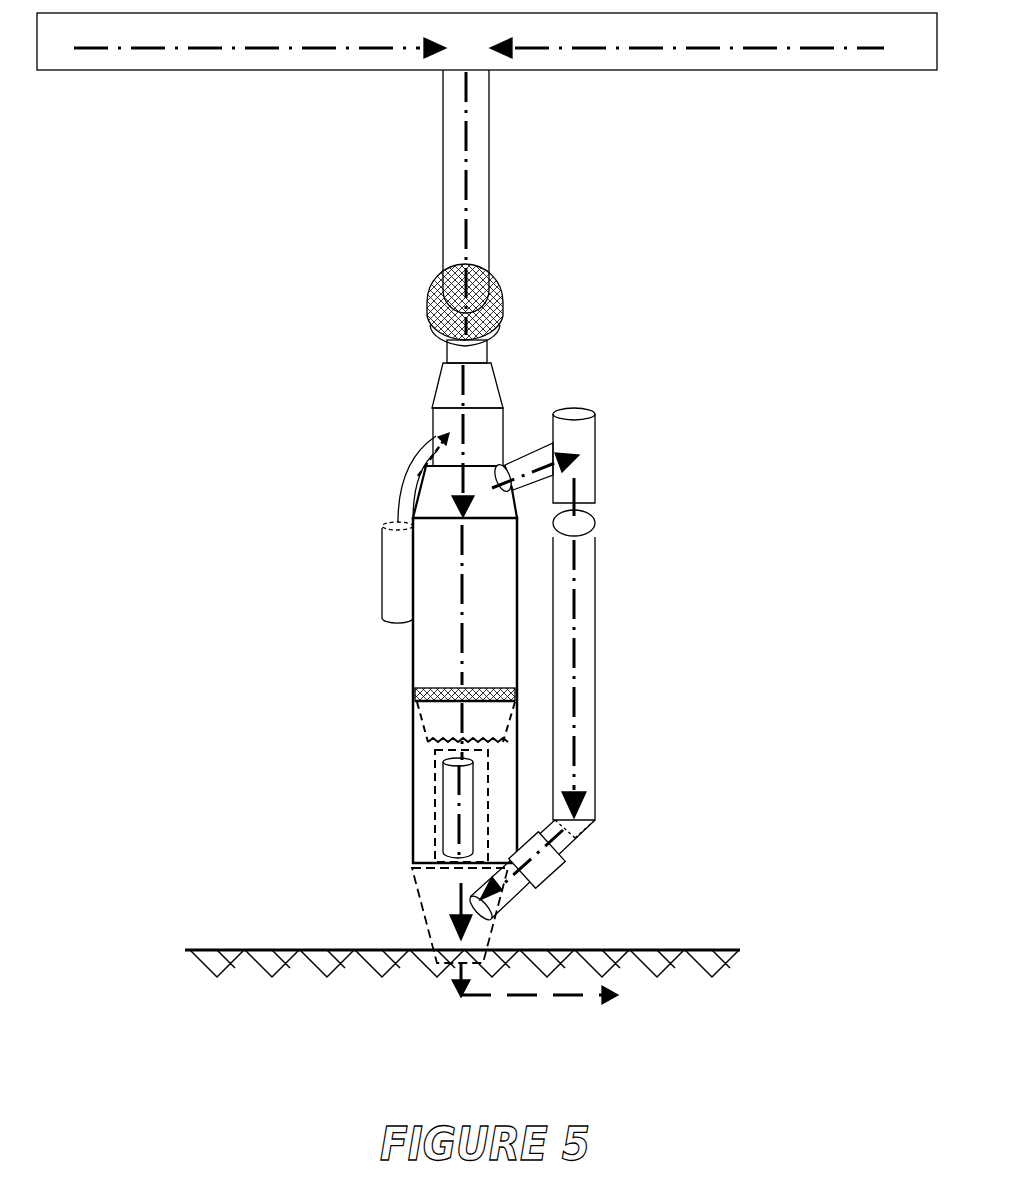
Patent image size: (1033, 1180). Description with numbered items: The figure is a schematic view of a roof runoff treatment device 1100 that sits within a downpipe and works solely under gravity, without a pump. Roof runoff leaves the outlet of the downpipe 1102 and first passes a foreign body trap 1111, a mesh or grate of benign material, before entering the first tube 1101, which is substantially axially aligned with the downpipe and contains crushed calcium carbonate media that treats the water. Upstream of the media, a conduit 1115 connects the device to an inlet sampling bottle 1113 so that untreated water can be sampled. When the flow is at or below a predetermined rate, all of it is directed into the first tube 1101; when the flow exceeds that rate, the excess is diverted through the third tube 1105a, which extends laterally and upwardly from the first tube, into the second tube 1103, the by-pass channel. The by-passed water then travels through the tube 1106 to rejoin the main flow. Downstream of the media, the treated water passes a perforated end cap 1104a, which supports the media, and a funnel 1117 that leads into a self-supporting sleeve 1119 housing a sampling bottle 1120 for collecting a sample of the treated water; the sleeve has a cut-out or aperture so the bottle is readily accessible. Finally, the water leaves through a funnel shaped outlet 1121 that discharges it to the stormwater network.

The device 1100 is at (487, 508).
The first tube 1101 is at (427, 641).
The downpipe 1102 is at (448, 218).
The second tube 1103 is at (588, 651).
The perforated end cap 1104a is at (418, 692).
The third tube 1105a is at (533, 445).
The tube 1106 is at (520, 885).
The foreign body trap 1111 is at (503, 317).
The inlet sampling bottle 1113 is at (388, 581).
The conduit 1115 is at (410, 482).
The funnel 1117 is at (431, 720).
The self-supporting sleeve 1119 is at (432, 845).
The sampling bottle 1120 is at (450, 805).
The funnel shaped outlet 1121 is at (435, 923).